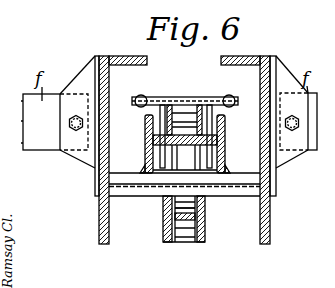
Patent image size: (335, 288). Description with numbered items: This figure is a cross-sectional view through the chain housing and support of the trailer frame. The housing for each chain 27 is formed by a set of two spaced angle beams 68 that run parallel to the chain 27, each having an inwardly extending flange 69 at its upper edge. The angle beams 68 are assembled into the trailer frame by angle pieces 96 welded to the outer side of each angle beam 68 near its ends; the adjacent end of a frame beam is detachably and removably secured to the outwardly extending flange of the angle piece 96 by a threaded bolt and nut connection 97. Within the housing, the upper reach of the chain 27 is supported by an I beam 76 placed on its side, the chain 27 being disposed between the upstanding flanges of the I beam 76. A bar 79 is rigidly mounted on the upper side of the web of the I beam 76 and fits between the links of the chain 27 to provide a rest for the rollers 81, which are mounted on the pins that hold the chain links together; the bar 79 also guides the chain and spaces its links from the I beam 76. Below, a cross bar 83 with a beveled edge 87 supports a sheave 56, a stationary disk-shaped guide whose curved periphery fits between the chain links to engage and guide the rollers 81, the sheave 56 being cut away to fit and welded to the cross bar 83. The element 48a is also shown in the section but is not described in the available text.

The angle beam 68 is at (109, 241).
The inwardly extending flange 69 is at (116, 56).
The angle piece 96 is at (82, 71).
The threaded bolt and nut connection 97 is at (75, 131).
The cross plate 48a is at (160, 97).
The roller 81 is at (186, 111).
The bar 79 is at (167, 136).
The I beam 76 is at (225, 150).
The beveled edge 87 is at (122, 176).
The sheave 56 is at (163, 207).
The chain 27 is at (205, 230).
The cross bar 83 is at (238, 193).